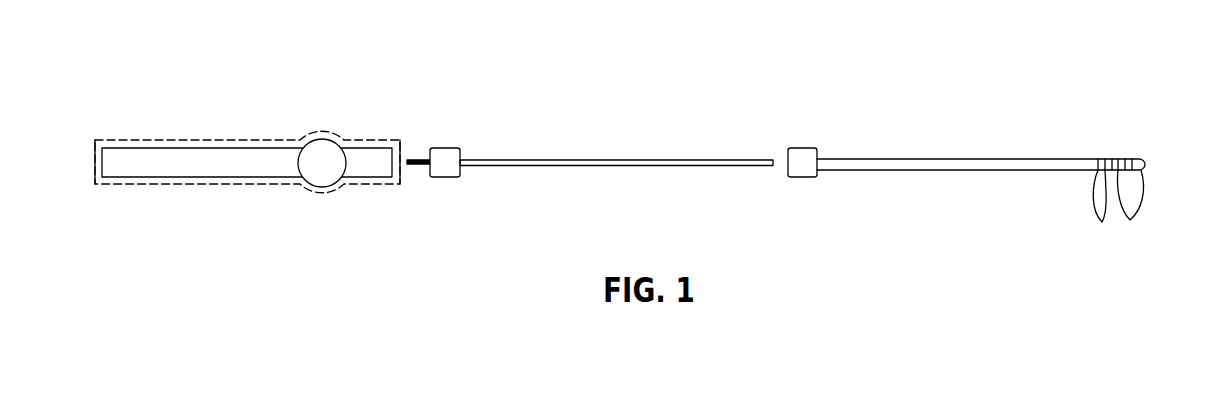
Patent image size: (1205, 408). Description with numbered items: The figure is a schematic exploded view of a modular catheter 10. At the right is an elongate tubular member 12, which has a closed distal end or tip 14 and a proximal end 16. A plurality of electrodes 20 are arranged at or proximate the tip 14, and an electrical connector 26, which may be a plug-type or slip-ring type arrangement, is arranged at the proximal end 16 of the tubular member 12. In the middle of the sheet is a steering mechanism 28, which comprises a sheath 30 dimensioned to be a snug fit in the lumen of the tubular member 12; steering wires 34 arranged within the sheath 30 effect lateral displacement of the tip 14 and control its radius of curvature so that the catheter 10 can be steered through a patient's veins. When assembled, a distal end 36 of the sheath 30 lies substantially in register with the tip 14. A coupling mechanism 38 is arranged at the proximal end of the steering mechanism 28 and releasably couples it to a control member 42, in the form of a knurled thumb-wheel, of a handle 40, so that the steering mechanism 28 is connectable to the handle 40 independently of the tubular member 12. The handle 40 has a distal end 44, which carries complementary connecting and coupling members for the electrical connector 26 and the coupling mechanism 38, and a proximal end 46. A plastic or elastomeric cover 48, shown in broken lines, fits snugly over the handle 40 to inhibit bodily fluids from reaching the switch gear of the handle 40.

The modular catheter 10 is at (733, 107).
The elongate tubular member 12 is at (958, 171).
The distal end or tip 14 is at (1143, 159).
The proximal end 16 is at (784, 152).
The electrodes 20 is at (1118, 204).
The electrical connector 26 is at (805, 178).
The steering mechanism 28 is at (583, 159).
The sheath 30 is at (612, 167).
The steering wires 34 is at (413, 161).
The distal end of the sheath 36 is at (770, 167).
The coupling mechanism 38 is at (448, 178).
The handle 40 is at (213, 147).
The control member 42 is at (317, 139).
The distal end of the handle 44 is at (400, 149).
The proximal end of the handle 46 is at (99, 156).
The cover 48 is at (232, 185).